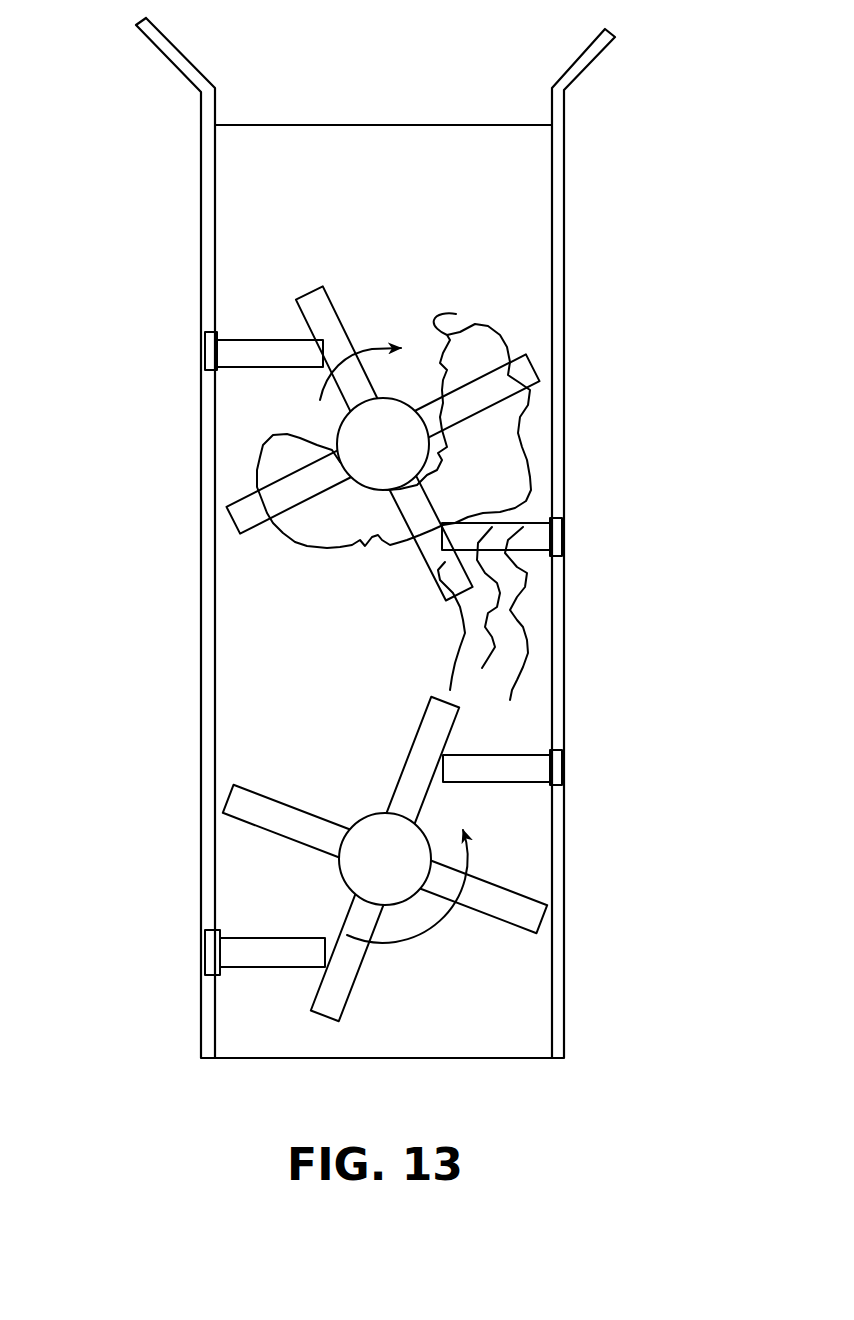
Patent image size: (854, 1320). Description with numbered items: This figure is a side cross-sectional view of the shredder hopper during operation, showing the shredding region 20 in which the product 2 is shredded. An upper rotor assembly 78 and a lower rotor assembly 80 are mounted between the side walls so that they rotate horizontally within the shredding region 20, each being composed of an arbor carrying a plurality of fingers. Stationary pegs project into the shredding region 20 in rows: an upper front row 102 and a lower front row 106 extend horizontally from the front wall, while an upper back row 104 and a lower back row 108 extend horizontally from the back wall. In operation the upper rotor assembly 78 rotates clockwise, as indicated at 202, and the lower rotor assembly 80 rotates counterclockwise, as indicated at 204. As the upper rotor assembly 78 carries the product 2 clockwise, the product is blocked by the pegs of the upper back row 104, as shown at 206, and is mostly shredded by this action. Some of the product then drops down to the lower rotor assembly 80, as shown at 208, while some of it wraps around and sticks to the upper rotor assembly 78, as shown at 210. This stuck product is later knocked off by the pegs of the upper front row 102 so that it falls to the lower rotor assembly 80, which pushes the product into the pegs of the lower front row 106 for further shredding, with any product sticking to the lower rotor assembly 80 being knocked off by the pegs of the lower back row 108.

The product 2 is at (520, 435).
The shredding region 20 is at (325, 679).
The upper rotor assembly 78 is at (302, 297).
The lower rotor assembly 80 is at (370, 818).
The upper front row 102 is at (170, 353).
The upper back row 104 is at (580, 535).
The lower front row 106 is at (183, 958).
The lower back row 108 is at (575, 770).
The clockwise rotation of upper rotor assembly 202 is at (375, 347).
The counterclockwise rotation of lower rotor assembly 204 is at (417, 940).
The blocking of product by upper back row pegs 206 is at (537, 477).
The product dropping to lower rotor assembly 208 is at (533, 638).
The product wrapping around upper rotor assembly 210 is at (307, 545).